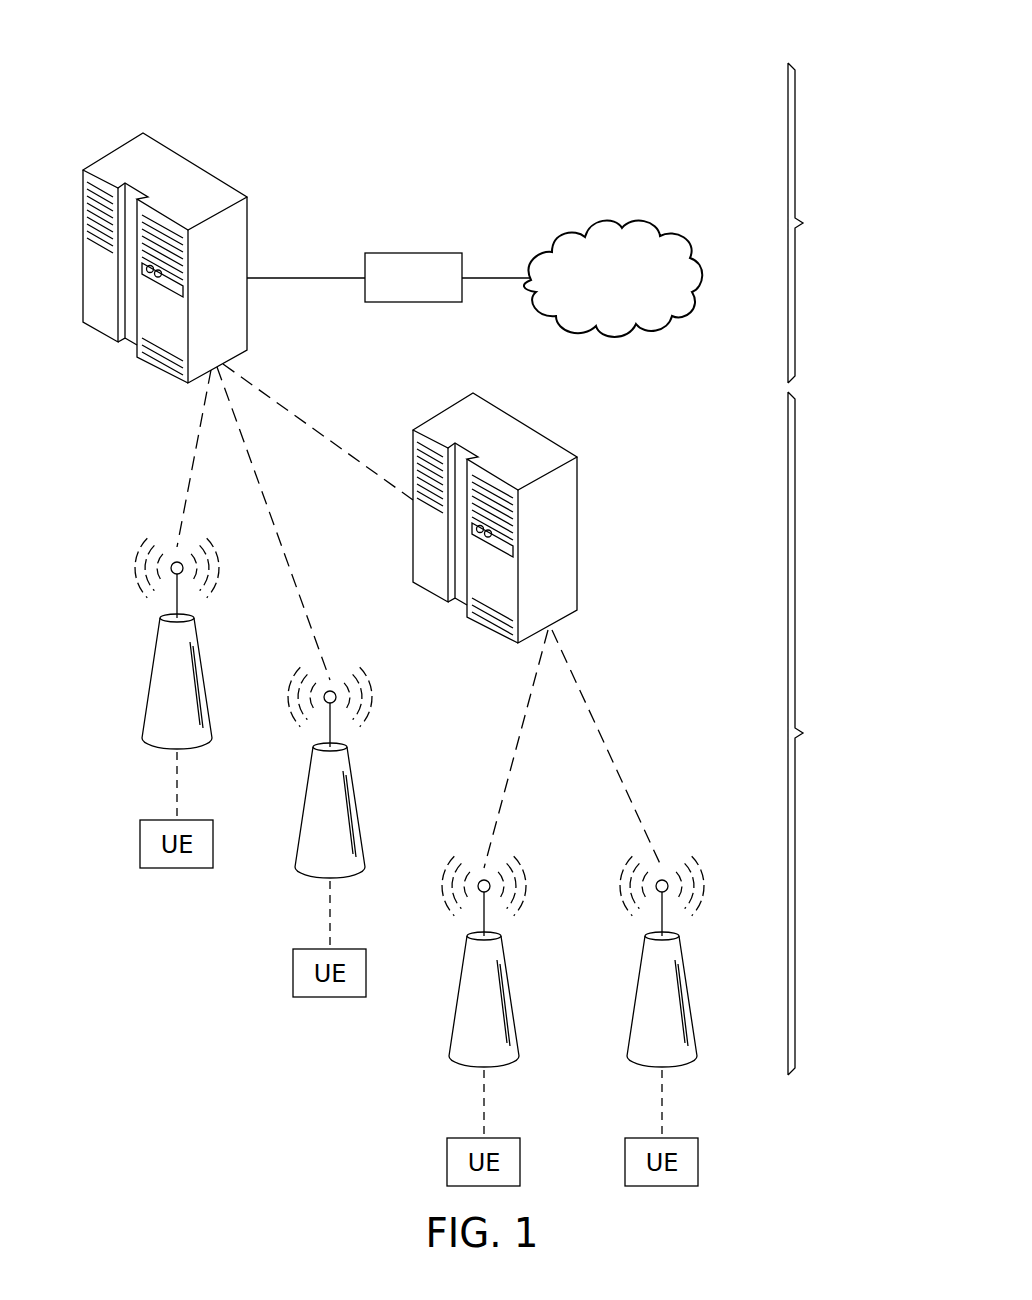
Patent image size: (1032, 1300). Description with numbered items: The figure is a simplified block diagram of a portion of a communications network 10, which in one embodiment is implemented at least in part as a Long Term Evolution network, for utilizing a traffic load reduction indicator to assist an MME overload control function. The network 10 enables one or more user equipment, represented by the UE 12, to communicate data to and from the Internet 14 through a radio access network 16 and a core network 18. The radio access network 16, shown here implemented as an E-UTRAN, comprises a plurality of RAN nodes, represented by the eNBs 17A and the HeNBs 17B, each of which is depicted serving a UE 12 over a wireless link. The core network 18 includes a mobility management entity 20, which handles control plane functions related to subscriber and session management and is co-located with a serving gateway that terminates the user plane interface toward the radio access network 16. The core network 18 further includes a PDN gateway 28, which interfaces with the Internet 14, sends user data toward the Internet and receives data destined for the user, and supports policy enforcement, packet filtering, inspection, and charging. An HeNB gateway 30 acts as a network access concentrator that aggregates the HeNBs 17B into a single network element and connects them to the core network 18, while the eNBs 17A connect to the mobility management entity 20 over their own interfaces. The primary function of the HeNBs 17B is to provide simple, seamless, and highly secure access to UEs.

The communications network 10 is at (261, 63).
The user equipment 12 is at (140, 843).
The Internet 14 is at (615, 218).
The radio access network 16 is at (844, 733).
The eNB 17A is at (150, 678).
The HeNB 17B is at (510, 995).
The core network 18 is at (852, 223).
The mobility management entity 20 is at (113, 150).
The PDN gateway 28 is at (413, 253).
The HeNB gateway 30 is at (578, 533).